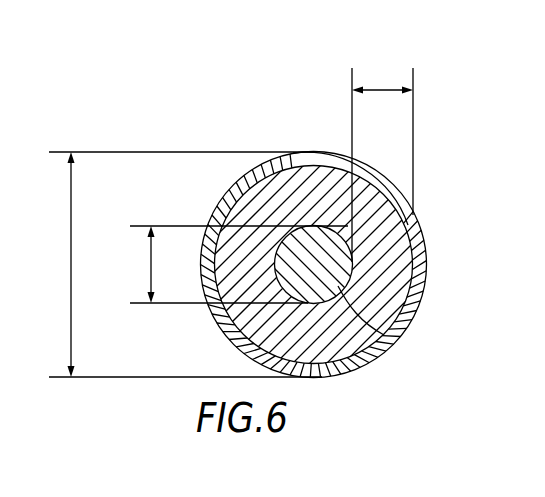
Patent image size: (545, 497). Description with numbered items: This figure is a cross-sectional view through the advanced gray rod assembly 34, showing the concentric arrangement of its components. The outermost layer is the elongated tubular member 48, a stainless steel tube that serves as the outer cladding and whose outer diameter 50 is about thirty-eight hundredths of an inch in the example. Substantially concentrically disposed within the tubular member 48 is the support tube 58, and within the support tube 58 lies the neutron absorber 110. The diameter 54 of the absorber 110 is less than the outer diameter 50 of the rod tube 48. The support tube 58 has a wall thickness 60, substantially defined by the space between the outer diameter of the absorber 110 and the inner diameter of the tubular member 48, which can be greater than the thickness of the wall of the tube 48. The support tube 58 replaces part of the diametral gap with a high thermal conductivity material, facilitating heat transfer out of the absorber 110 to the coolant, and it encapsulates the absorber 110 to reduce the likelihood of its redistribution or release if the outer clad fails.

The gray rod assembly 34 is at (253, 122).
The elongated tubular member 48 is at (372, 360).
The outer diameter 50 is at (70, 255).
The diameter 54 is at (149, 263).
The support tube 58 is at (403, 280).
The wall thickness 60 is at (385, 90).
The absorber 110 is at (393, 343).